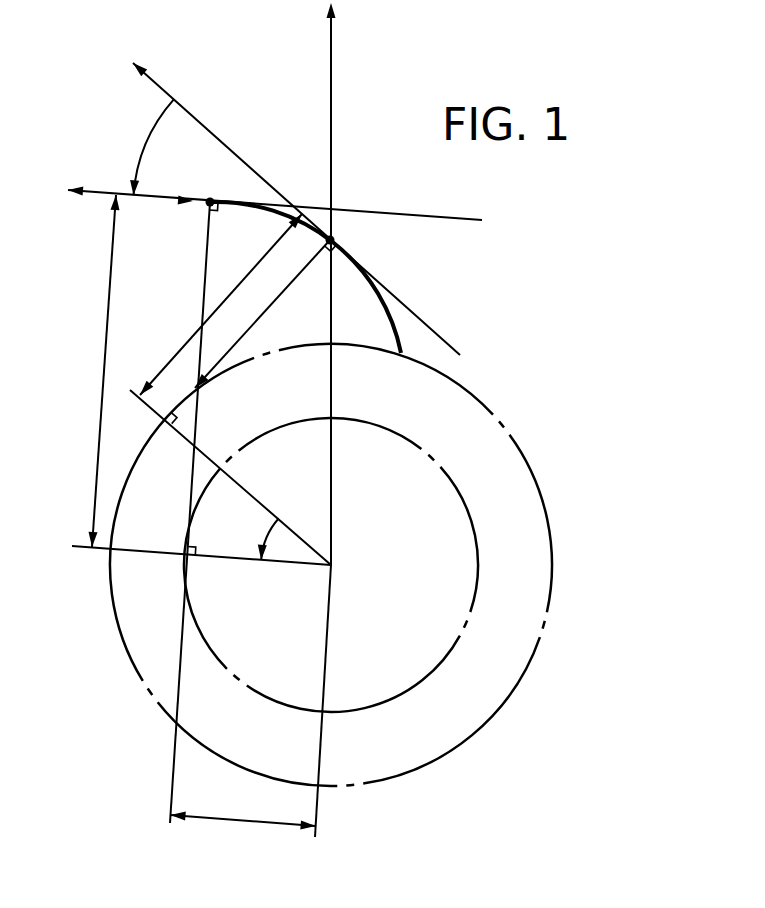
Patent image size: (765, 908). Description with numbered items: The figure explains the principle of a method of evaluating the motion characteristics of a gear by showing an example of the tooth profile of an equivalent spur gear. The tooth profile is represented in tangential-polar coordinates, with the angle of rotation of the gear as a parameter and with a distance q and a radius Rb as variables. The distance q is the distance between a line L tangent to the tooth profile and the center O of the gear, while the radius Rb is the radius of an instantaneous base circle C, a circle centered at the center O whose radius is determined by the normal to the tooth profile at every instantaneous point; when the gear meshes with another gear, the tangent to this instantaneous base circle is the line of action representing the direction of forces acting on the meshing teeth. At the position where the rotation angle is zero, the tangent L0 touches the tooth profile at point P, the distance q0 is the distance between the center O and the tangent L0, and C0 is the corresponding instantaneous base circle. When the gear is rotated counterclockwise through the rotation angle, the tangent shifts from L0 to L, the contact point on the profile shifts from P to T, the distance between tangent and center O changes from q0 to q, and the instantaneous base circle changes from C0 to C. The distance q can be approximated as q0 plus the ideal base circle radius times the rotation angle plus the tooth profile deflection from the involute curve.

The center of the gear O is at (215, 420).
The instantaneous base circle at zero rotation angle C0 is at (551, 562).
The instantaneous base circle C is at (474, 597).
The tooth profile is at (391, 320).
The tangent to the tooth profile at point P L0 is at (271, 301).
The line tangent to the tooth profile L is at (263, 198).
The contact point T is at (194, 493).
The point P is at (340, 238).
The distance q(θ) q is at (73, 371).
The distance q0 is at (221, 304).
The radius Rb(θ) of the instantaneous base circle Rb is at (243, 835).